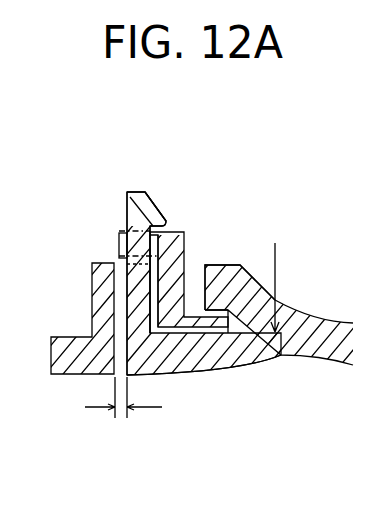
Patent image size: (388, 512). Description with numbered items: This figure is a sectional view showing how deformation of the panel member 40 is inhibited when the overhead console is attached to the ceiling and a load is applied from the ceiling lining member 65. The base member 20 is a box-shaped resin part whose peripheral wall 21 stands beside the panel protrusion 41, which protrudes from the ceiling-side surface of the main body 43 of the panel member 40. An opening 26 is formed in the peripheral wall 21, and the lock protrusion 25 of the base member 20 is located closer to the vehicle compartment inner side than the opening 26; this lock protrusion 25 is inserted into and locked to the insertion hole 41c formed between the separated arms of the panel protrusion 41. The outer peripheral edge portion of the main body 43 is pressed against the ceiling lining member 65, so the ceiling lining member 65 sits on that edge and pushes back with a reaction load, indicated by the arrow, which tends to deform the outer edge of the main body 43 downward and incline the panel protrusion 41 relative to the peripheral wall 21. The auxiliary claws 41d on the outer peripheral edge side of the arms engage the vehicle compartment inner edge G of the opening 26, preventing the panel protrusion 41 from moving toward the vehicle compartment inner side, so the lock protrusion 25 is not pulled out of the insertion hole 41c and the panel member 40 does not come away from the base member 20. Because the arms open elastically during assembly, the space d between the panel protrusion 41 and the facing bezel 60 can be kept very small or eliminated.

The panel member 40 is at (203, 362).
The panel protrusion 41 is at (137, 285).
The opening 26 is at (127, 207).
The auxiliary claw 41d is at (158, 200).
The main body 43 is at (248, 355).
The bezel 60 is at (56, 376).
The base member 20 is at (176, 272).
The vehicle compartment inner edge G is at (170, 231).
The ceiling lining member 65 is at (323, 348).
The peripheral wall 21 is at (197, 277).
The lock protrusion 25 is at (118, 241).
The insertion hole 41c is at (116, 240).
The space d is at (121, 415).